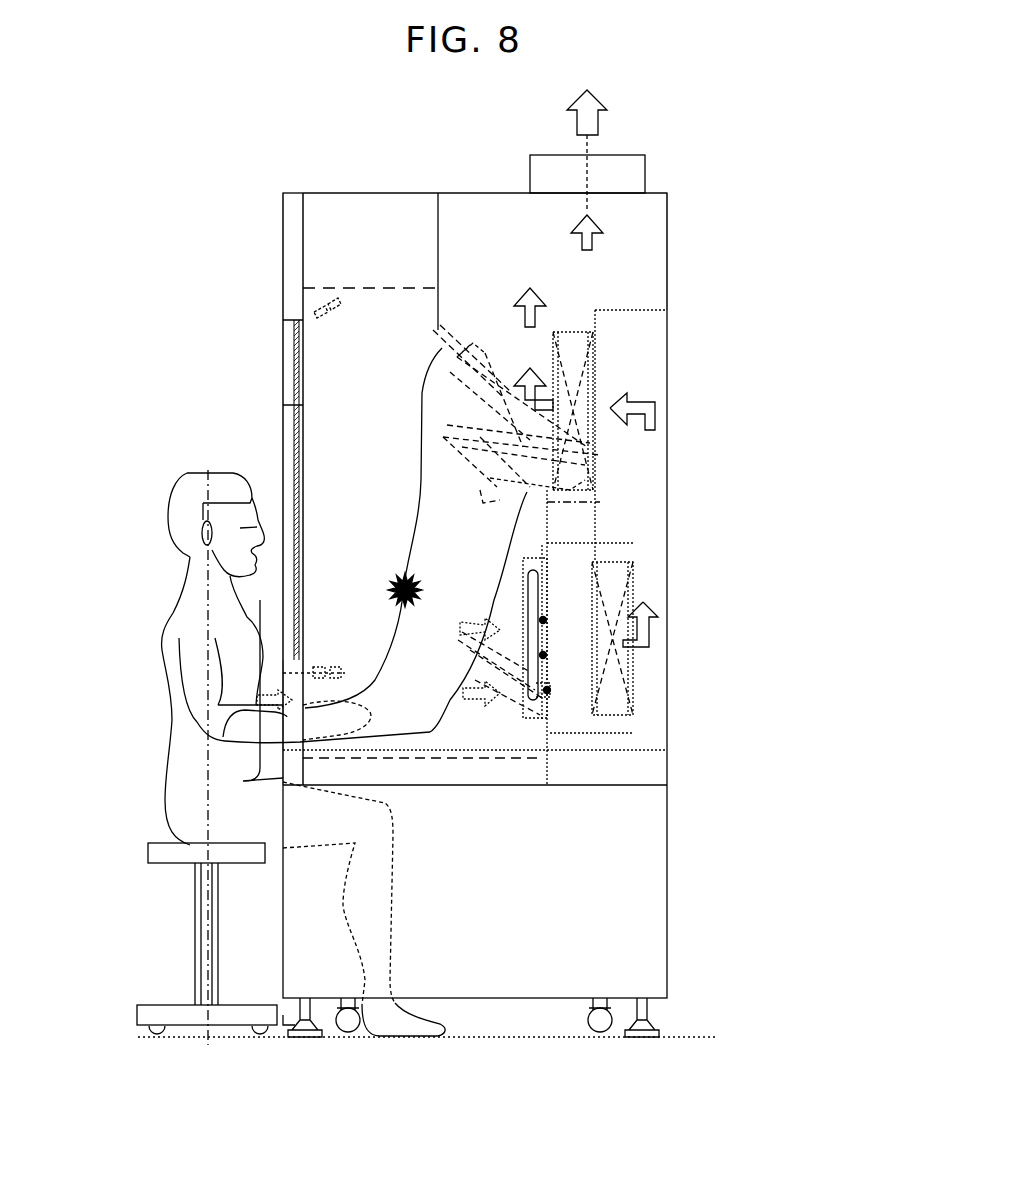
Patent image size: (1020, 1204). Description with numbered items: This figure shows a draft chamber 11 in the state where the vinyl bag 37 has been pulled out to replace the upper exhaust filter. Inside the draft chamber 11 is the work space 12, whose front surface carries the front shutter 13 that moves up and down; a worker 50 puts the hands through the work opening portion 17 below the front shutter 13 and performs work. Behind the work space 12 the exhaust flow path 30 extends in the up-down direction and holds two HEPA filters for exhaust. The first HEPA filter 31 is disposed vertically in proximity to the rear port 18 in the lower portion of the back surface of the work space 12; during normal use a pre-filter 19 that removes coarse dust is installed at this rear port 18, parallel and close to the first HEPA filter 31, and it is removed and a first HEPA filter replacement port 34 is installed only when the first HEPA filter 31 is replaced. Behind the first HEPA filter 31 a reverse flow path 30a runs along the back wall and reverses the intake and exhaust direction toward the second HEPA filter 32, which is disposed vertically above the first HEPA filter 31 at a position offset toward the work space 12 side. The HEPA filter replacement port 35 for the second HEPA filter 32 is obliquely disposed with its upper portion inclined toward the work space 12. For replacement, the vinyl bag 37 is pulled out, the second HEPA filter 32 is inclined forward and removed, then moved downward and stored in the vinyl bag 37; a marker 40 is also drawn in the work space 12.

The draft chamber 11 is at (432, 192).
The work space 12 is at (333, 432).
The front shutter 13 is at (295, 448).
The work opening portion 17 is at (222, 706).
The rear port 18 is at (549, 688).
The pre-filter 19 is at (538, 693).
The exhaust flow path 30 is at (648, 210).
The reverse flow path 30a is at (648, 590).
The first HEPA filter 31 is at (617, 667).
The second HEPA filter 32 is at (600, 353).
The first HEPA filter replacement port 34 is at (533, 588).
The HEPA filter replacement port 35 is at (503, 470).
The vinyl bag 37 is at (422, 403).
The contaminant 40 is at (390, 588).
The worker 50 is at (173, 573).